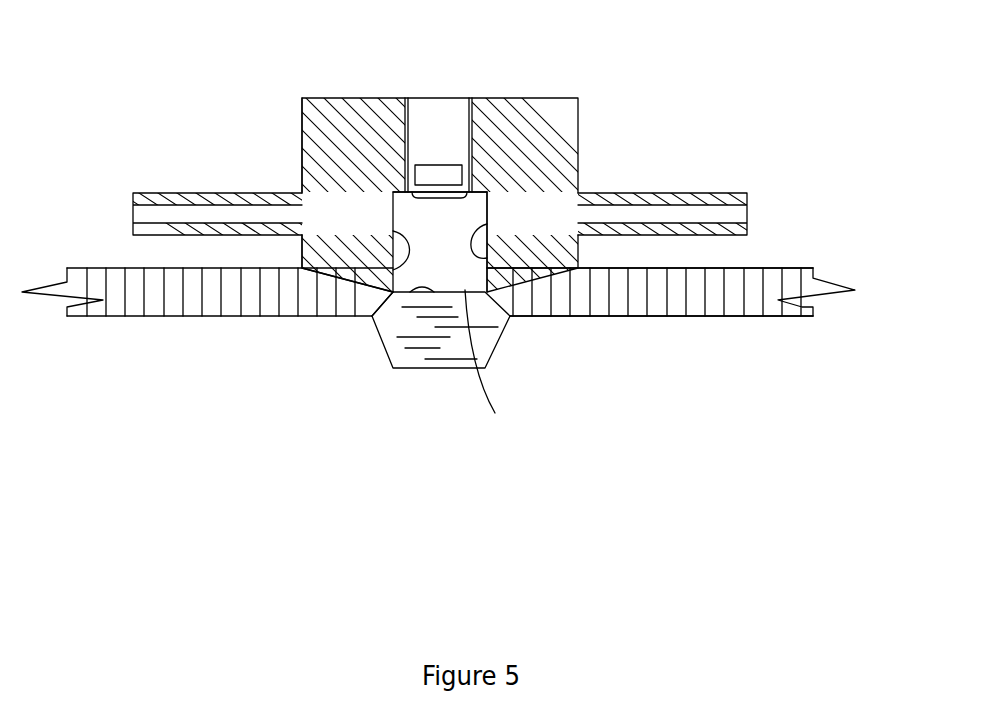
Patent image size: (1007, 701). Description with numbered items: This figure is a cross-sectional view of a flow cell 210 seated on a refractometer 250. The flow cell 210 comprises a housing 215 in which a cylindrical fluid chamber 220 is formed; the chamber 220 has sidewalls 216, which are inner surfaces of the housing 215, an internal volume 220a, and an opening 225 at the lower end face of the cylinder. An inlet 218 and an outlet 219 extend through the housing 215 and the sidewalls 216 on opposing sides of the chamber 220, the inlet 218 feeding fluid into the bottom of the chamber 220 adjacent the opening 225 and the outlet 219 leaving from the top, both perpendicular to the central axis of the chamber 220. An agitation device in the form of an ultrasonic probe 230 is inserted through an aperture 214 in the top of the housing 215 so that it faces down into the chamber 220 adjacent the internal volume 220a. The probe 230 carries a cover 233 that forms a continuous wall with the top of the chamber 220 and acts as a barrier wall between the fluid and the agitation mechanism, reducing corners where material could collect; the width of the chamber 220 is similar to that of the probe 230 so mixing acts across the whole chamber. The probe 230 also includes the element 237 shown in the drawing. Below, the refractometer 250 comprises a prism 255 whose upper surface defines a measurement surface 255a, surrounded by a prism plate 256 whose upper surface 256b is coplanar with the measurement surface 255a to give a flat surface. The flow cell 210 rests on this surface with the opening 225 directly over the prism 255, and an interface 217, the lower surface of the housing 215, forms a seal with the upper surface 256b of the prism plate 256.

The flow cell 210 is at (568, 97).
The aperture 214 is at (405, 145).
The housing 215 is at (323, 178).
The sidewalls 216 is at (395, 292).
The interface 217 is at (330, 262).
The inlet 218 is at (695, 200).
The outlet 219 is at (160, 198).
The fluid chamber 220 is at (487, 217).
The internal volume 220a is at (455, 220).
The opening 225 is at (506, 367).
The ultrasonic probe 230 is at (437, 115).
The cover 233 is at (447, 200).
The ledge 237 is at (443, 175).
The refractometer 250 is at (820, 276).
The prism 255 is at (487, 335).
The measurement surface 255a is at (372, 317).
The prism plate 256 is at (655, 290).
The upper surface 256b is at (753, 268).